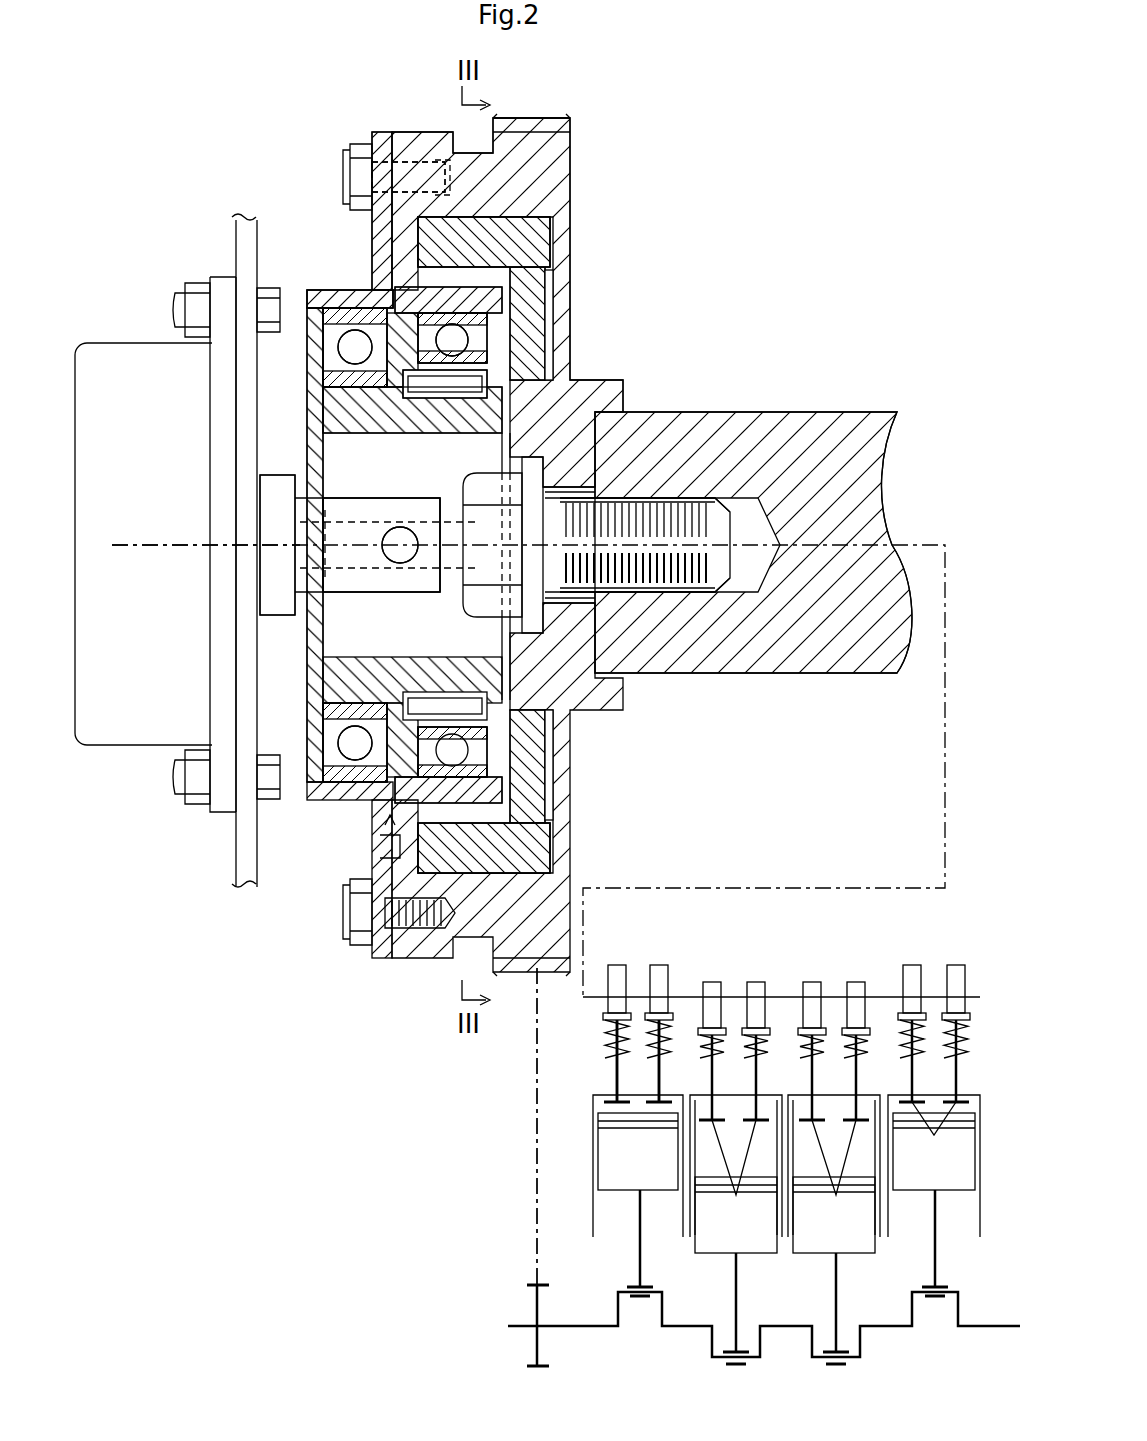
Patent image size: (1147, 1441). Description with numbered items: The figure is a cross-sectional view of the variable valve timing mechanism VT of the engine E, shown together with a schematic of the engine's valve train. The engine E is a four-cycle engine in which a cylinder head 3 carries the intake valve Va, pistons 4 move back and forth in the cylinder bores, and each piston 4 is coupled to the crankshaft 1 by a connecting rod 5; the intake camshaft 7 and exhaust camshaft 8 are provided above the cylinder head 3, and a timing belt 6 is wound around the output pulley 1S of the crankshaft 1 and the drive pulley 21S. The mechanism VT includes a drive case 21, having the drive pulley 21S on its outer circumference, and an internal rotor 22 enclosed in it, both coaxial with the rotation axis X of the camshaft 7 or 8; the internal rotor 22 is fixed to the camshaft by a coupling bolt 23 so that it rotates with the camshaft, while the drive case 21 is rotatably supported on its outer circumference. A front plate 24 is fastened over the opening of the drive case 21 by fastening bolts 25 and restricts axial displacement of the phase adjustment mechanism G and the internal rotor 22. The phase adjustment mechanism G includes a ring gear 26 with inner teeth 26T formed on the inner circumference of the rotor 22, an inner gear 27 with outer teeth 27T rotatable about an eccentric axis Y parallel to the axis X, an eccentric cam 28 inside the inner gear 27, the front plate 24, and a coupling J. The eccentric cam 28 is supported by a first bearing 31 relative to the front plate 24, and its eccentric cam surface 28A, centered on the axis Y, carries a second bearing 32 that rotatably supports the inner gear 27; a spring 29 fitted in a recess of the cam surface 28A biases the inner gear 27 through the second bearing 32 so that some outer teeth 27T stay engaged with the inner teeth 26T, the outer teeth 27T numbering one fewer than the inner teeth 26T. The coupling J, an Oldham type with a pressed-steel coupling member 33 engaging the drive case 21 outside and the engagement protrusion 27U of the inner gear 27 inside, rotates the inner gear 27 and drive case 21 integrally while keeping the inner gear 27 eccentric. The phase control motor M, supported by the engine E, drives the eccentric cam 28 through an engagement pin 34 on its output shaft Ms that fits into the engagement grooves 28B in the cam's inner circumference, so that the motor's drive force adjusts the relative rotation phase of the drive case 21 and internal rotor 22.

The phase control motor M is at (128, 343).
The variable valve timing mechanism VT is at (297, 121).
The front plate 24 is at (376, 132).
The fastening bolts 25 is at (343, 177).
The drive pulley 21S is at (523, 118).
The engine E is at (846, 158).
The drive case 21 is at (572, 152).
The internal rotor 22 is at (503, 222).
The ring gear 26 is at (470, 272).
The engagement protrusion 27U is at (376, 290).
The inner gear 27 is at (490, 300).
The first bearing 31 is at (337, 350).
The second bearing 32 is at (468, 345).
The intake camshaft 7 is at (810, 412).
The exhaust camshaft 8 is at (785, 997).
The eccentric cam 28 is at (309, 415).
The output shaft Ms is at (405, 490).
The spring 29 is at (450, 398).
The engagement pin 34 is at (398, 530).
The eccentric axis Y is at (273, 540).
The rotation axis X is at (198, 549).
The coupling bolt 23 is at (725, 565).
The engagement grooves 28B is at (366, 555).
The eccentric cam surface 28A is at (440, 703).
The phase adjustment mechanism G is at (510, 742).
The outer teeth 27T is at (490, 800).
The coupling member 33 is at (368, 790).
The inner teeth 26T is at (478, 820).
The coupling J is at (385, 845).
The intake valve Va is at (652, 1100).
The cylinder head 3 is at (712, 1095).
The pistons 4 is at (598, 1158).
The connecting rod 5 is at (637, 1265).
The crankshaft 1 is at (570, 1325).
The output pulley 1S is at (537, 1310).
The timing belt 6 is at (535, 1122).